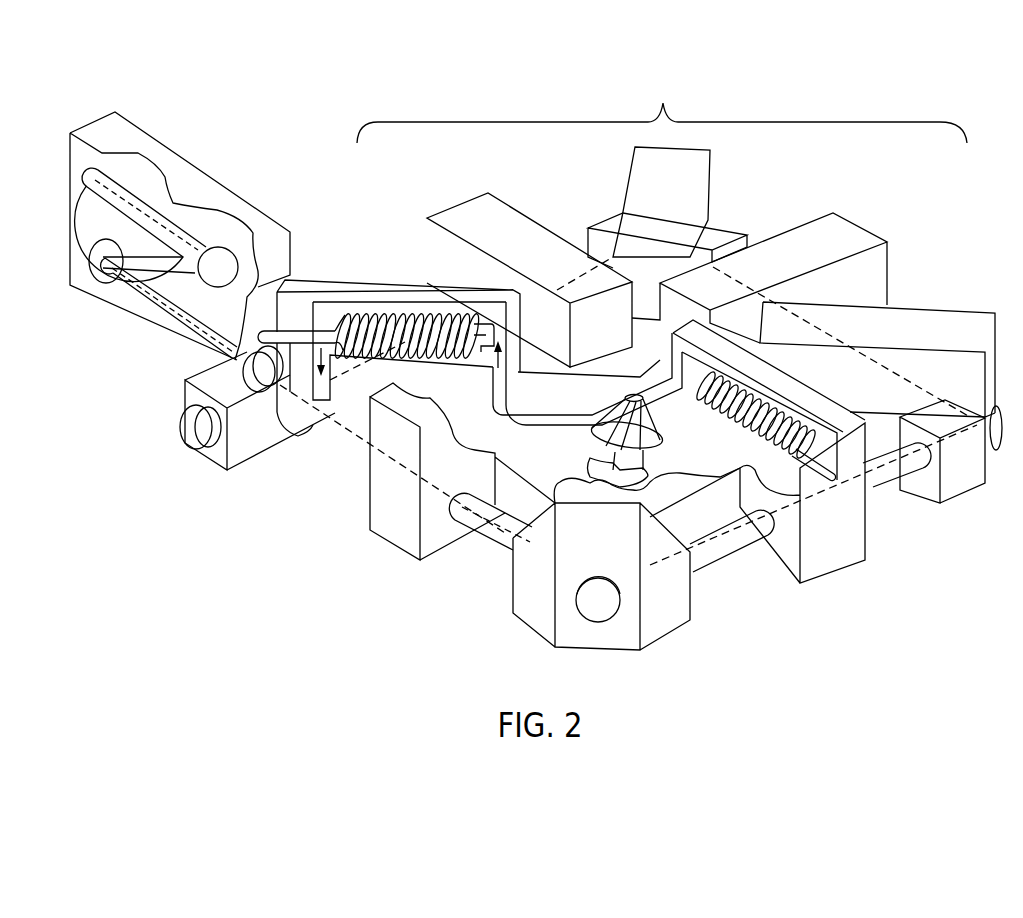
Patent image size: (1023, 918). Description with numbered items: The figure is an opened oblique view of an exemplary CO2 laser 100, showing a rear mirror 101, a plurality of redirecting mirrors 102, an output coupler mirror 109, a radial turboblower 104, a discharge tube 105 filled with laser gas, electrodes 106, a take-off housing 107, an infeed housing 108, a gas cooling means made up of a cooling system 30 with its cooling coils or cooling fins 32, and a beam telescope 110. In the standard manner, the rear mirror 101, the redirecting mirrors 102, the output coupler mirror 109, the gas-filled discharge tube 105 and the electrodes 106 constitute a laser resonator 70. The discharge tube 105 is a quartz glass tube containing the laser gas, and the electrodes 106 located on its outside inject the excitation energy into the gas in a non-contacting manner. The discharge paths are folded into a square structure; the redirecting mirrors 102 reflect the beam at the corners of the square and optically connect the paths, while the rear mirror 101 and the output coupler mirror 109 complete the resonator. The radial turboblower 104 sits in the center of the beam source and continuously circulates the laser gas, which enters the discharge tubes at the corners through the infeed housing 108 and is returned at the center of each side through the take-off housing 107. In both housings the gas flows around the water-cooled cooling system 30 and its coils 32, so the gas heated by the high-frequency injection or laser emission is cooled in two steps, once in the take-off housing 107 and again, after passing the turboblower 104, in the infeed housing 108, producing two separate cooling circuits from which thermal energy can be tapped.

The cooling system 30 is at (343, 305).
The cooling coils 32 is at (385, 312).
The laser resonator 70 is at (662, 106).
The CO2 laser 100 is at (802, 612).
The rear mirror 101 is at (190, 423).
The redirecting mirrors 102 is at (603, 607).
The turboblower 104 is at (649, 400).
The discharge tube 105 is at (497, 537).
The electrodes 106 is at (478, 508).
The take-off housing 107 is at (810, 485).
The infeed housing 108 is at (305, 405).
The output coupler mirror 109 is at (248, 380).
The beam telescope 110 is at (163, 156).